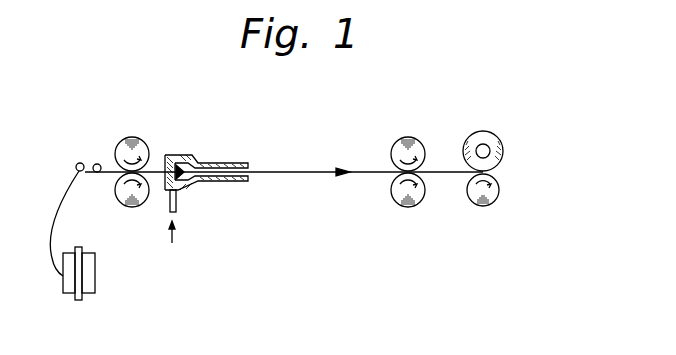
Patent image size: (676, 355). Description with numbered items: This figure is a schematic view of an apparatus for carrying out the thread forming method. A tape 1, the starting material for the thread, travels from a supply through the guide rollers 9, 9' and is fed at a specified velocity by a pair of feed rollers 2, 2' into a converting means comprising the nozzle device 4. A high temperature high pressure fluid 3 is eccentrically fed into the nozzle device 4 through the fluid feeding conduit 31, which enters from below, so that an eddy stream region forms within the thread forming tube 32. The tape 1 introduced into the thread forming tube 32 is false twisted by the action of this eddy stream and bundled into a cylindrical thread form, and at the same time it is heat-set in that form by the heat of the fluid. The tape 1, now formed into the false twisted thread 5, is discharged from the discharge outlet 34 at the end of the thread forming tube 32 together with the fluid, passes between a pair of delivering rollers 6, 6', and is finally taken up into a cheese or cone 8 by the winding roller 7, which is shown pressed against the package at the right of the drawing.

The tape 1 is at (92, 285).
The feed roller 2 is at (133, 134).
The feed roller 2' is at (132, 207).
The high temperature high pressure fluid 3 is at (173, 235).
The nozzle device 4 is at (190, 155).
The false twisted thread 5 is at (312, 172).
The delivering roller 6 is at (417, 138).
The delivering roller 6' is at (426, 206).
The winding roller 7 is at (496, 202).
The cheese or cone 8 is at (503, 141).
The guide roller 9 is at (63, 134).
The guide roller 9' is at (103, 132).
The fluid feeding conduit 31 is at (177, 198).
The thread forming tube 32 is at (232, 162).
The discharge outlet 34 is at (258, 166).